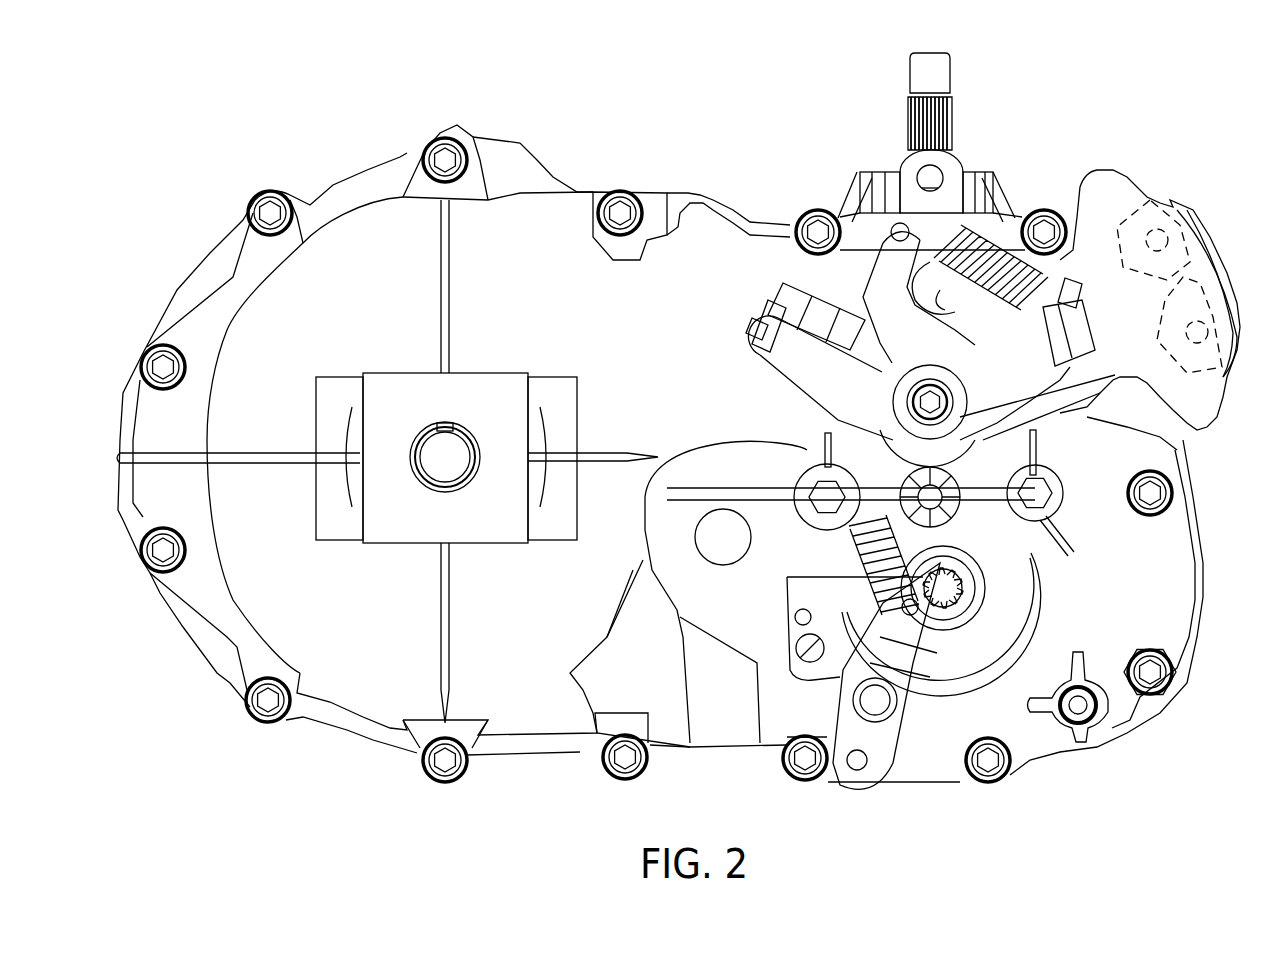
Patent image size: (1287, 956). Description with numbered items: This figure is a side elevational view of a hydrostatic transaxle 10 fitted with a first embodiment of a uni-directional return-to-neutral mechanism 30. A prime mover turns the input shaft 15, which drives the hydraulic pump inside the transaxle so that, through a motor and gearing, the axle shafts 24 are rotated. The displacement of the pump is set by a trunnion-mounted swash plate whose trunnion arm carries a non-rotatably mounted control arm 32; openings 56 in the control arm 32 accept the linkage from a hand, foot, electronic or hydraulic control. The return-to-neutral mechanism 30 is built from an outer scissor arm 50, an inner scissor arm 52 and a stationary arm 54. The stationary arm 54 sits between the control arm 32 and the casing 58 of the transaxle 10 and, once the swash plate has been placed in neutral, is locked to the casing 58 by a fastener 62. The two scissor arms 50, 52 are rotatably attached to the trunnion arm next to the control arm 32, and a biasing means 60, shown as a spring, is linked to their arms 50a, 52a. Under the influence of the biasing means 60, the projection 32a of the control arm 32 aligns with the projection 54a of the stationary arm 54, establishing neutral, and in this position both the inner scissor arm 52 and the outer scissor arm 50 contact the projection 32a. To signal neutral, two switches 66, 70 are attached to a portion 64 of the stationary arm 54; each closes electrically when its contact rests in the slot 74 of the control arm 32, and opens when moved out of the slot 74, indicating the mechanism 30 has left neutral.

The hydrostatic transaxle 10 is at (203, 110).
The input shaft 15 is at (943, 77).
The axle shafts 24 is at (459, 470).
The return-to-neutral mechanism 30 is at (742, 380).
The control arm 32 is at (905, 172).
The projection of control arm 32a is at (772, 303).
The outer scissor arm 50 is at (903, 325).
The arm of outer scissor arm 50a is at (887, 222).
The inner scissor arm 52 is at (800, 290).
The arm of inner scissor arm 52a is at (1085, 290).
The stationary arm 54 is at (1085, 405).
The projection of stationary arm 54a is at (763, 320).
The openings 56 is at (950, 182).
The casing 58 is at (1133, 590).
The biasing means 60 is at (998, 258).
The fastener 62 is at (940, 318).
The portion of stationary arm 64 is at (1213, 262).
The switch 66 is at (1233, 330).
The switch 70 is at (1175, 215).
The slot 74 is at (1193, 277).